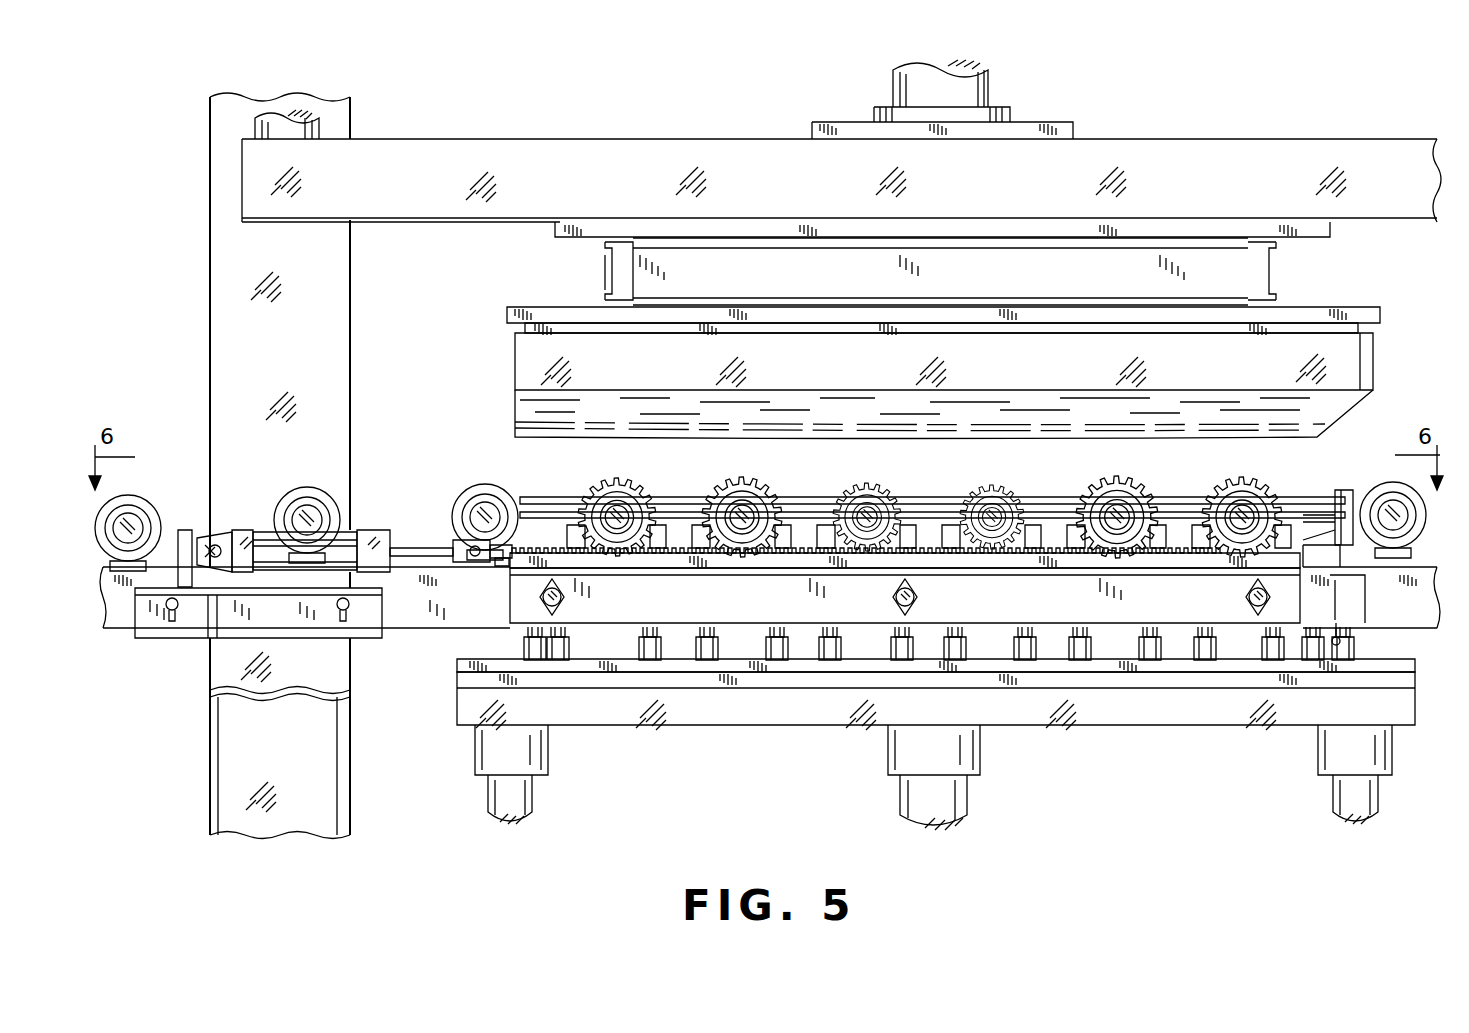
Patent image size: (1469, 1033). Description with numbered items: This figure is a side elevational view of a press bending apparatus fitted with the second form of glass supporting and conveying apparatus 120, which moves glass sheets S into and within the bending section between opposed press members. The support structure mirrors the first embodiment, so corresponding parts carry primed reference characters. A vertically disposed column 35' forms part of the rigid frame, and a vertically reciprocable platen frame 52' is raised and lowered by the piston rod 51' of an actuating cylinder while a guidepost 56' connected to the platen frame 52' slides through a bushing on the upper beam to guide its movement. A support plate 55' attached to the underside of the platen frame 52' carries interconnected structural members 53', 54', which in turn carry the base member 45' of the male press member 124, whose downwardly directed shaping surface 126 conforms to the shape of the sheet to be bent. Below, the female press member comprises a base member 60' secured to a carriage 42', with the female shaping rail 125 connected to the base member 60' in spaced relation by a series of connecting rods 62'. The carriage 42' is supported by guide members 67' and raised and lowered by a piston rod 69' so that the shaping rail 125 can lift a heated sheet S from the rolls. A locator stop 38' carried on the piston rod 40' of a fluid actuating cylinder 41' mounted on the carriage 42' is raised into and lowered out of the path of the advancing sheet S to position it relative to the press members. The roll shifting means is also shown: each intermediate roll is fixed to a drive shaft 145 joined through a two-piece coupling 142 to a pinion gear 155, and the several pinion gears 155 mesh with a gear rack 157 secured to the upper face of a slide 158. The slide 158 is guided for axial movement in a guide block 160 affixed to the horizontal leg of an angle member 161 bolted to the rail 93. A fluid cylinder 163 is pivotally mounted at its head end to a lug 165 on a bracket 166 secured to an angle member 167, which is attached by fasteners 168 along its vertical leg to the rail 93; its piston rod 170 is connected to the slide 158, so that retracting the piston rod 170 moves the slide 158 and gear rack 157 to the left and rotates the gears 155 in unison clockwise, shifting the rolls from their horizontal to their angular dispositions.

The vertically disposed column 35' is at (242, 466).
The platen frame 52' is at (841, 149).
The guidepost 56' is at (278, 87).
The piston rod 51' is at (975, 86).
The support plate 55' is at (975, 242).
The structural member 53' is at (940, 271).
The structural member 54' is at (580, 272).
The base member 45' is at (975, 329).
The male press member 124 is at (525, 362).
The male press member shaping surface 126 is at (530, 410).
The supporting and conveying apparatus 120 is at (1038, 466).
The glass sheet S is at (1050, 498).
The two-piece coupling 142 is at (630, 478).
The drive shaft 145 is at (620, 512).
The pinion gear 155 is at (610, 470).
The guide block 160 is at (678, 566).
The angle member 161 is at (796, 613).
The female shaping rail 125 is at (1060, 545).
The connecting rod 62' is at (939, 674).
The base member 60' is at (936, 713).
The carriage 42' is at (936, 731).
The guide member 67' is at (900, 786).
The piston rod 69' is at (903, 778).
The rail 93 is at (418, 615).
The angle member 167 is at (274, 628).
The fasteners 168 is at (168, 612).
The bracket 166 is at (178, 540).
The lug 165 is at (212, 538).
The fluid cylinder 163 is at (345, 536).
The piston rod 170 is at (422, 546).
The gear rack 157 is at (505, 548).
The slide 158 is at (500, 568).
The locator stop 38' is at (1364, 495).
The piston rod 40' is at (1371, 586).
The fluid actuating cylinder 41' is at (1393, 648).